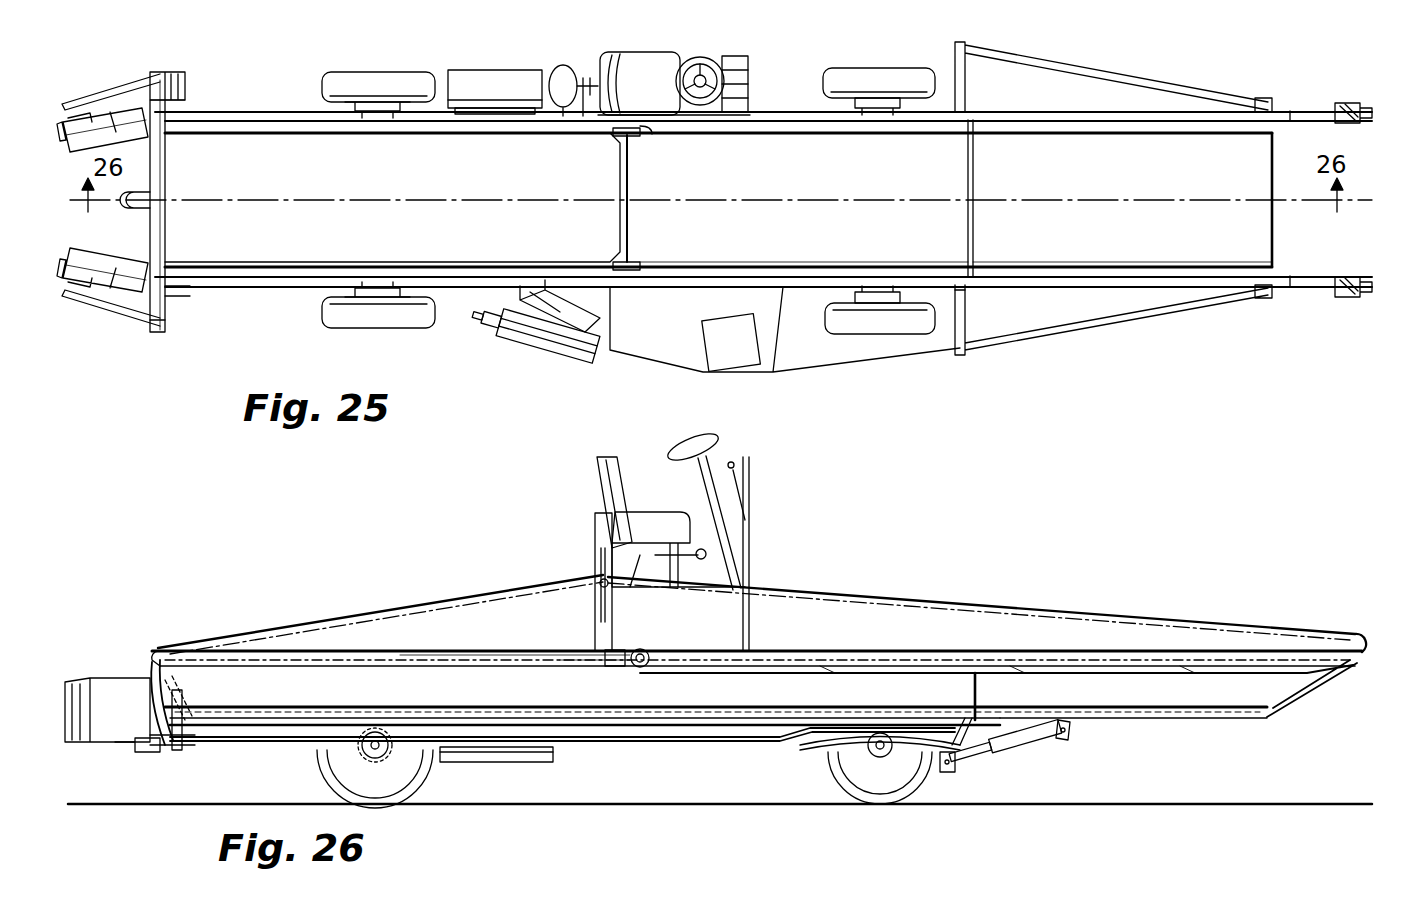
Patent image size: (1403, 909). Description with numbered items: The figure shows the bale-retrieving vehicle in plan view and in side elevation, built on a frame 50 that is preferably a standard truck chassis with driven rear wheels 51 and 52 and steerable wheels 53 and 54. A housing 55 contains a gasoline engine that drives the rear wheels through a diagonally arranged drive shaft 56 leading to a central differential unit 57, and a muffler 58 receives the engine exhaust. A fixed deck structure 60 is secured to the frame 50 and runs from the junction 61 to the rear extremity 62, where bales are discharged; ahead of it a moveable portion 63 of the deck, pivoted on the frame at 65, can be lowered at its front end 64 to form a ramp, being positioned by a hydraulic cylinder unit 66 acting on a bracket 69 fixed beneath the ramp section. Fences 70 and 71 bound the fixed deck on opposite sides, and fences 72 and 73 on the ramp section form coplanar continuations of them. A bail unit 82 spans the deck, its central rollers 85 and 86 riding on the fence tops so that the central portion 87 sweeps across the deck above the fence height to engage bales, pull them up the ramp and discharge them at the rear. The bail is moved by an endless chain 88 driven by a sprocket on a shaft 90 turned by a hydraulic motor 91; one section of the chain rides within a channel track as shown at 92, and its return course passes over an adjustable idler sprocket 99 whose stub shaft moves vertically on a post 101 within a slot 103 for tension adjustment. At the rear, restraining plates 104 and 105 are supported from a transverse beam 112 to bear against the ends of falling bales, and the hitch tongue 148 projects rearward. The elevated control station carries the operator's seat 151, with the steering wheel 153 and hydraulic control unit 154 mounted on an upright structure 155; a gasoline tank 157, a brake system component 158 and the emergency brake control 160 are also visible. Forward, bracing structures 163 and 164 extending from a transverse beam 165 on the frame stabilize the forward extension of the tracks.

In FIG. 26, the frame 50 is at (677, 756).
In FIG. 25, the driven wheel 51 is at (335, 325).
In FIG. 25, the driven wheel 52 is at (345, 72).
In FIG. 26, the driven wheel 52 is at (318, 784).
In FIG. 25, the steerable wheel 53 is at (830, 338).
In FIG. 25, the steerable wheel 54 is at (842, 68).
In FIG. 26, the steerable wheel 54 is at (830, 770).
In FIG. 25, the housing 55 is at (668, 345).
In FIG. 26, the drive shaft 56 is at (462, 764).
In FIG. 26, the central differential unit 57 is at (345, 752).
In FIG. 25, the muffler 58 is at (560, 355).
In FIG. 25, the fixed deck structure 60 is at (804, 197).
In FIG. 26, the fixed deck structure 60 is at (705, 700).
In FIG. 25, the junction 61 is at (966, 168).
In FIG. 26, the junction 61 is at (978, 695).
In FIG. 25, the rear extremity 62 is at (167, 176).
In FIG. 26, the rear extremity 62 is at (190, 700).
In FIG. 25, the moveable portion of the deck structure 63 is at (1122, 197).
In FIG. 26, the moveable portion of the deck structure 63 is at (1155, 720).
In FIG. 25, the front end 64 is at (1273, 232).
In FIG. 26, the pivot 65 is at (1030, 745).
In FIG. 26, the hydraulic cylinder unit 66 is at (965, 760).
In FIG. 26, the bracket 69 is at (1068, 738).
In FIG. 25, the fence 70 is at (345, 130).
In FIG. 26, the fence 70 is at (318, 690).
In FIG. 25, the fence 71 is at (335, 262).
In FIG. 25, the fence 72 is at (1010, 136).
In FIG. 26, the fence 72 is at (1240, 720).
In FIG. 25, the fence 73 is at (1020, 262).
In FIG. 25, the bail unit 82 is at (548, 262).
In FIG. 26, the bail unit 82 is at (525, 646).
In FIG. 25, the central roller 85 is at (650, 138).
In FIG. 26, the central roller 85 is at (648, 648).
In FIG. 25, the central roller 86 is at (642, 268).
In FIG. 25, the central portion of the bail 87 is at (654, 198).
In FIG. 26, the central portion of the bail 87 is at (618, 648).
In FIG. 26, the endless chain 88 is at (305, 610).
In FIG. 26, the shaft 90 is at (185, 740).
In FIG. 25, the hydraulic motor 91 is at (180, 92).
In FIG. 26, the chain section within channel 92 is at (405, 655).
In FIG. 26, the adjustable idler sprocket 99 is at (598, 590).
In FIG. 26, the post 101 is at (593, 530).
In FIG. 26, the slot 103 is at (598, 562).
In FIG. 25, the restraining plate 104 is at (60, 150).
In FIG. 26, the restraining plate 104 is at (100, 676).
In FIG. 25, the restraining plate 105 is at (60, 250).
In FIG. 25, the transverse beam 112 is at (176, 310).
In FIG. 26, the transverse beam 112 is at (153, 656).
In FIG. 25, the hitch tongue 148 is at (138, 212).
In FIG. 26, the hitch tongue 148 is at (135, 755).
In FIG. 26, the operator's seat 151 is at (600, 483).
In FIG. 25, the steering wheel 153 is at (696, 56).
In FIG. 26, the steering wheel 153 is at (688, 435).
In FIG. 26, the hydraulic control unit 154 is at (752, 483).
In FIG. 26, the upright structure 155 is at (752, 522).
In FIG. 25, the gasoline tank 157 is at (497, 52).
In FIG. 25, the brake system component 158 is at (565, 64).
In FIG. 26, the emergency brake control 160 is at (716, 536).
In FIG. 25, the bracing structure 163 is at (1130, 44).
In FIG. 25, the bracing structure 164 is at (1078, 345).
In FIG. 25, the transverse beam 165 is at (968, 318).
In FIG. 26, the transverse beam 165 is at (955, 695).